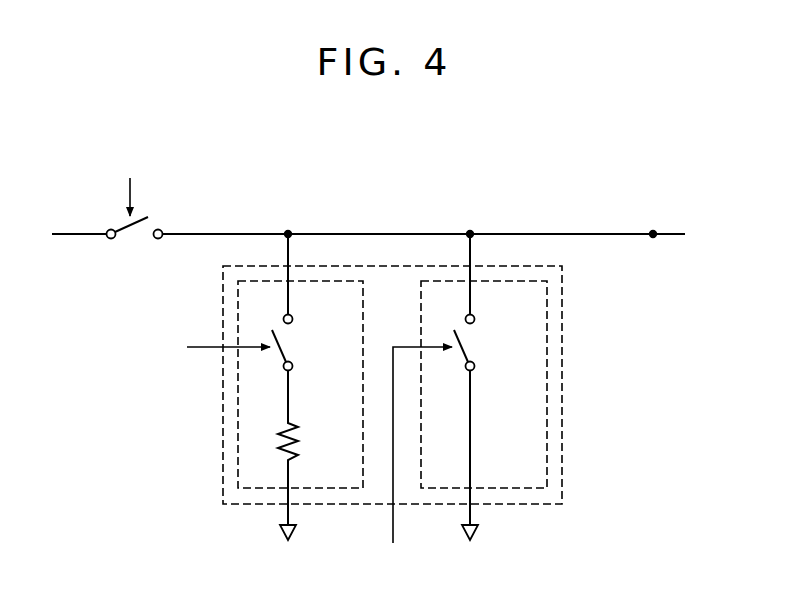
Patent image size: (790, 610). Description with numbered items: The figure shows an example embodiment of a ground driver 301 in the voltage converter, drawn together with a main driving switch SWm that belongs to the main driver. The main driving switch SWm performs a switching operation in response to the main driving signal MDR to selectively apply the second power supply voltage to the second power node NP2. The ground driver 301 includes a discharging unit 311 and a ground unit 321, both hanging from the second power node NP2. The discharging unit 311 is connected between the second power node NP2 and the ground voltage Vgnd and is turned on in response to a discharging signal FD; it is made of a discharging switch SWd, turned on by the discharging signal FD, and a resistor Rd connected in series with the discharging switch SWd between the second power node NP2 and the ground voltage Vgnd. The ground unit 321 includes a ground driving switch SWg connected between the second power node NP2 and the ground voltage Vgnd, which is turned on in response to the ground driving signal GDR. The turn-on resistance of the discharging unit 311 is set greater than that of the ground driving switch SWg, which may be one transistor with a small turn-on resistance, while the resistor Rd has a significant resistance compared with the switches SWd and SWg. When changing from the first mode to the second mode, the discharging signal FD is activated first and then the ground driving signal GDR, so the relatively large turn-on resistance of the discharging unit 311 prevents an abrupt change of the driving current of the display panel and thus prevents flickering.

The ground driver 301 is at (562, 385).
The discharging unit 311 is at (238, 438).
The ground unit 321 is at (547, 441).
The main driving switch SWm is at (135, 244).
The discharging switch SWd is at (307, 302).
The ground driving switch SWg is at (489, 379).
The resistor Rd is at (304, 448).
The second power node NP2 is at (653, 230).
The main driving signal MDR is at (130, 184).
The discharging signal FD is at (212, 345).
The ground driving signal GDR is at (413, 460).
The ground voltage Vgnd is at (380, 549).